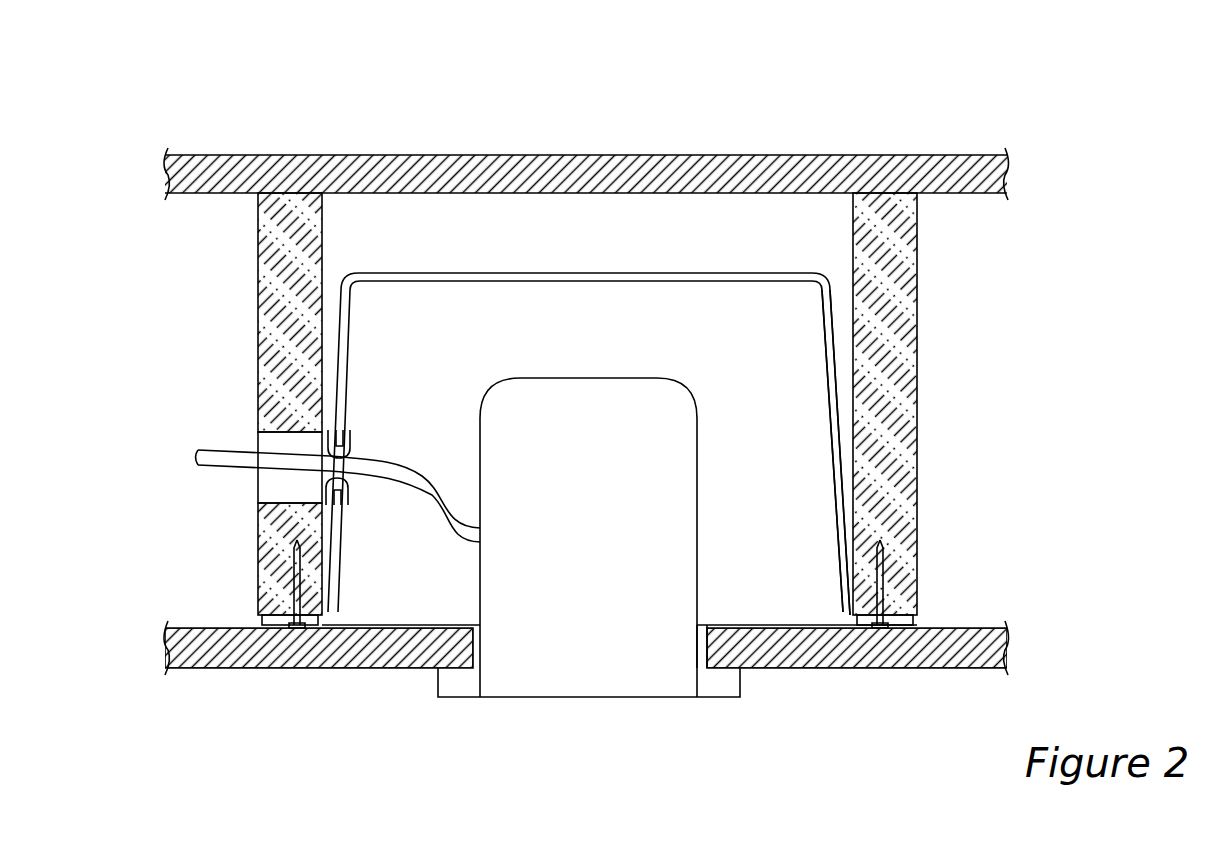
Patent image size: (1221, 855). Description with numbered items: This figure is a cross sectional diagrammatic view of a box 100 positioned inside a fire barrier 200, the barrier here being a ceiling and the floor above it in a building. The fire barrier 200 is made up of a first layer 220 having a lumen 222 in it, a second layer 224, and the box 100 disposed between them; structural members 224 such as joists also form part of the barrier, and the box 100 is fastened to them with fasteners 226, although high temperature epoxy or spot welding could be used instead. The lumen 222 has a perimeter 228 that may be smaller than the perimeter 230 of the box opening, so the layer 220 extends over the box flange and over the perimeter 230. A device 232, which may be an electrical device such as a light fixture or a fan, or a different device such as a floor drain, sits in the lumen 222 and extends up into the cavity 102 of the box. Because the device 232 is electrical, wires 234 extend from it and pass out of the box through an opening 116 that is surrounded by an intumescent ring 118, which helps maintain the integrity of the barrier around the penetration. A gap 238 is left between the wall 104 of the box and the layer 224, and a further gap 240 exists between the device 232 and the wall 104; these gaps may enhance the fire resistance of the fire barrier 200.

The fire barrier 200 is at (952, 112).
The box 100 is at (460, 272).
The cavity 102 is at (578, 303).
The wall 104 is at (835, 333).
The gap 238 is at (845, 380).
The gap 240 is at (733, 325).
The second layer 224 is at (250, 172).
The first layer 220 is at (290, 668).
The perimeter 230 is at (830, 650).
The lumen 222 is at (703, 655).
The perimeter 228 is at (473, 650).
The device 232 is at (593, 685).
The wires 234 is at (230, 455).
The intumescent ring 118 is at (330, 440).
The opening 116 is at (325, 478).
The fasteners 226 is at (297, 560).